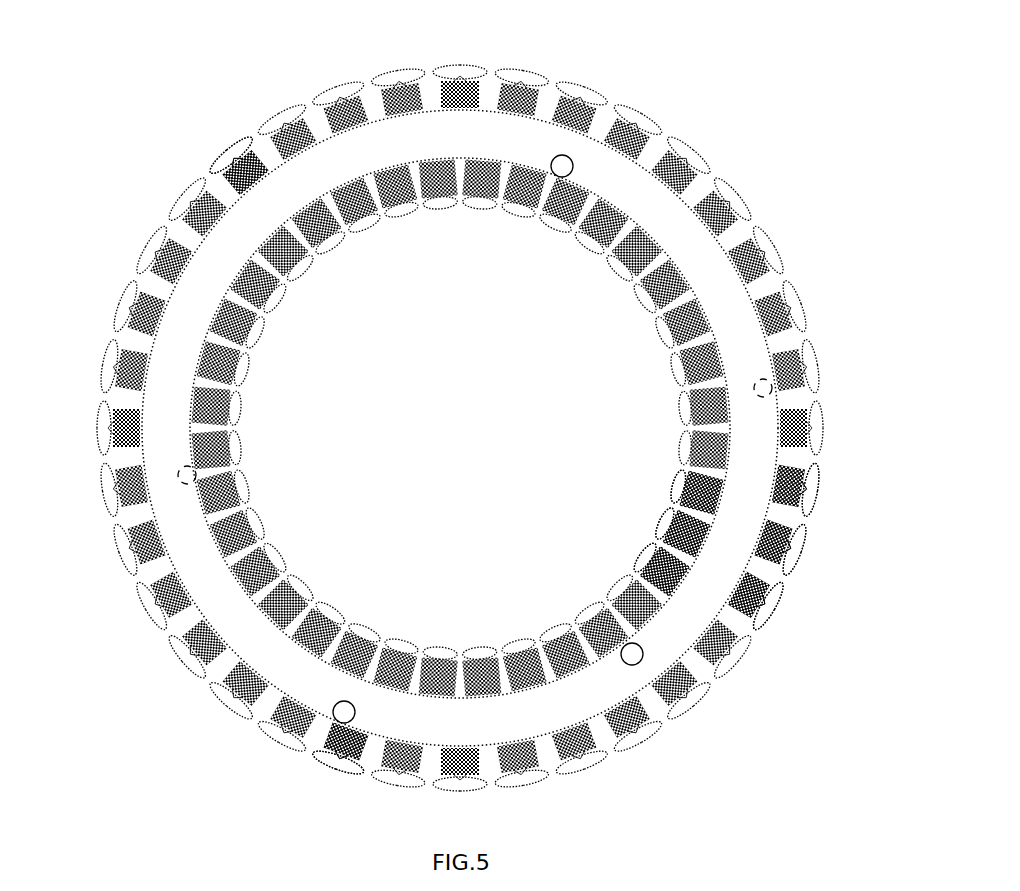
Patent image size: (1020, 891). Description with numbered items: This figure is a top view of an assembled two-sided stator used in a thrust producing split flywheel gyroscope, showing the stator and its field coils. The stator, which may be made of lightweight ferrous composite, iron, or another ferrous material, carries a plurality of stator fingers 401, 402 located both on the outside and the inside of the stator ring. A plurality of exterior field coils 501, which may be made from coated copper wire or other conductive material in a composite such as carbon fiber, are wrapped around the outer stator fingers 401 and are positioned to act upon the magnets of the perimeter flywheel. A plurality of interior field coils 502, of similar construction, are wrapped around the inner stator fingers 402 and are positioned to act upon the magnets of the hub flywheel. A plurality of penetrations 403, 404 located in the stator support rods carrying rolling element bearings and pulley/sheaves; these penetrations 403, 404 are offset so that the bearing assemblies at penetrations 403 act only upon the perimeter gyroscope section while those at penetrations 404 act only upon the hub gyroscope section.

The stator fingers 401 is at (270, 738).
The stator fingers 402 is at (298, 598).
The penetrations 403 is at (260, 152).
The penetrations 404 is at (571, 158).
The exterior field coils 501 is at (765, 595).
The interior field coils 502 is at (648, 570).